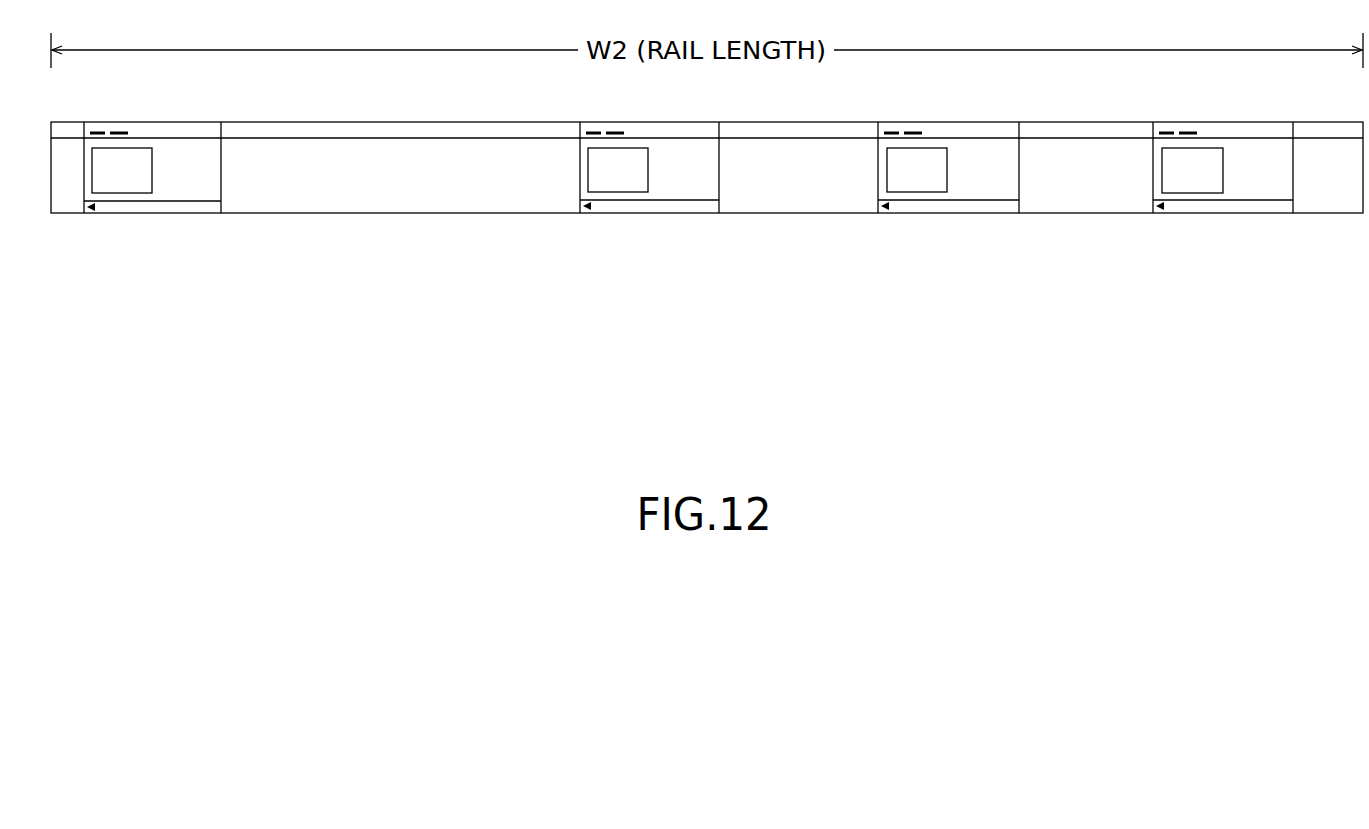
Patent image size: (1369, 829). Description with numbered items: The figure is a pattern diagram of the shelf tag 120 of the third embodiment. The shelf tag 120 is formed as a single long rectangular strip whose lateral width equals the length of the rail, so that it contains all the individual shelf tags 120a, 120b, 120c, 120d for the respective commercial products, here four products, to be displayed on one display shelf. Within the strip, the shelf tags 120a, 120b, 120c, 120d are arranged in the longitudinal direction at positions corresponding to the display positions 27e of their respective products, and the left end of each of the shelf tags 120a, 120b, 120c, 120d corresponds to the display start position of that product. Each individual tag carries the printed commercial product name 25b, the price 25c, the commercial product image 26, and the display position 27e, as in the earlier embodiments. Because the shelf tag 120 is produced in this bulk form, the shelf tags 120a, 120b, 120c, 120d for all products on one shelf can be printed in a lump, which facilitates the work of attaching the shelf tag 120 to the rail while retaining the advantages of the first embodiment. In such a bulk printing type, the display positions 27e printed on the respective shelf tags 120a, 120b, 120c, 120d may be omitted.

The shelf tag 120 is at (385, 215).
The shelf tag 120a is at (221, 190).
The shelf tag 120b is at (719, 190).
The shelf tag 120c is at (1019, 190).
The shelf tag 120d is at (1293, 190).
The commercial product image 26 is at (102, 176).
The commercial product name 25b is at (198, 152).
The price 25c is at (186, 196).
The display position 27e is at (103, 215).